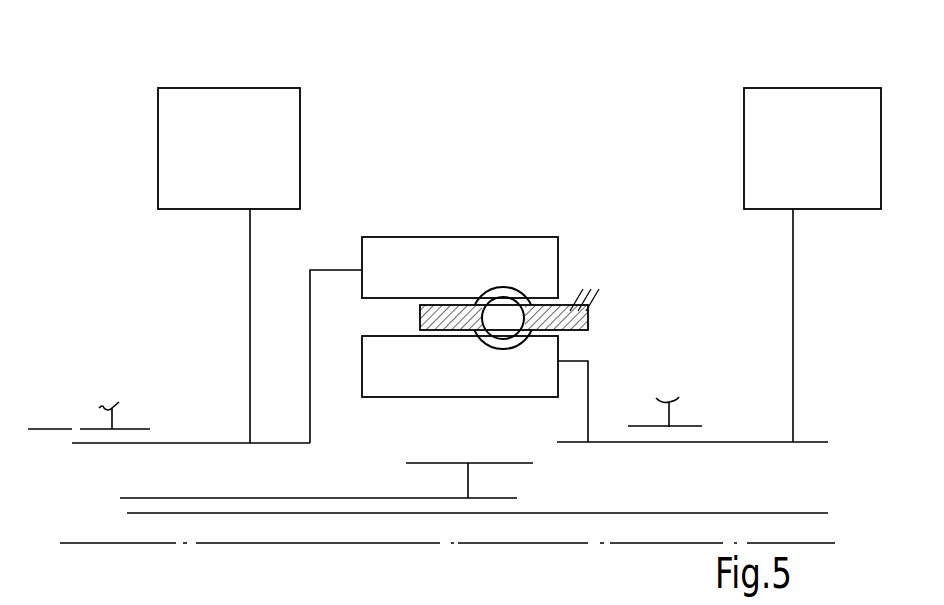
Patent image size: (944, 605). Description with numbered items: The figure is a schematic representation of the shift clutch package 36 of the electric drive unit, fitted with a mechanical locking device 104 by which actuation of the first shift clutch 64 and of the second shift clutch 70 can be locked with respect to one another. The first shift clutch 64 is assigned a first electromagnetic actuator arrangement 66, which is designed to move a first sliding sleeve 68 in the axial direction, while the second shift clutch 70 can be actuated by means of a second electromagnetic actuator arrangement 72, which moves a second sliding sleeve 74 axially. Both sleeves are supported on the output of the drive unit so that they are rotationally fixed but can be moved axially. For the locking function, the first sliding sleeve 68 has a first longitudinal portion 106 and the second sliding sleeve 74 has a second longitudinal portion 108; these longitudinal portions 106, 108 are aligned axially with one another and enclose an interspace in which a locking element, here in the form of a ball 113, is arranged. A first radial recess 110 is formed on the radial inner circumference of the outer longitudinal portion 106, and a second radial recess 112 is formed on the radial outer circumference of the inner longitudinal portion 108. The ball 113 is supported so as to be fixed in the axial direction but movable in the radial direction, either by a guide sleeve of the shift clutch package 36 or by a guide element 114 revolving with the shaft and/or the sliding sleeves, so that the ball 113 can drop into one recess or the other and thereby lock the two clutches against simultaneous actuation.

The shift clutch package 36 is at (697, 118).
The first shift clutch 64 is at (77, 430).
The first electromagnetic actuator arrangement 66 is at (277, 138).
The first sliding sleeve 68 is at (278, 440).
The second shift clutch 70 is at (548, 457).
The second electromagnetic actuator arrangement 72 is at (767, 143).
The second sliding sleeve 74 is at (600, 443).
The locking device 104 is at (535, 209).
The first longitudinal portion 106 is at (387, 257).
The second longitudinal portion 108 is at (550, 348).
The first radial recess 110 is at (513, 287).
The second radial recess 112 is at (495, 343).
The ball 113 is at (503, 297).
The guide element 114 is at (425, 333).